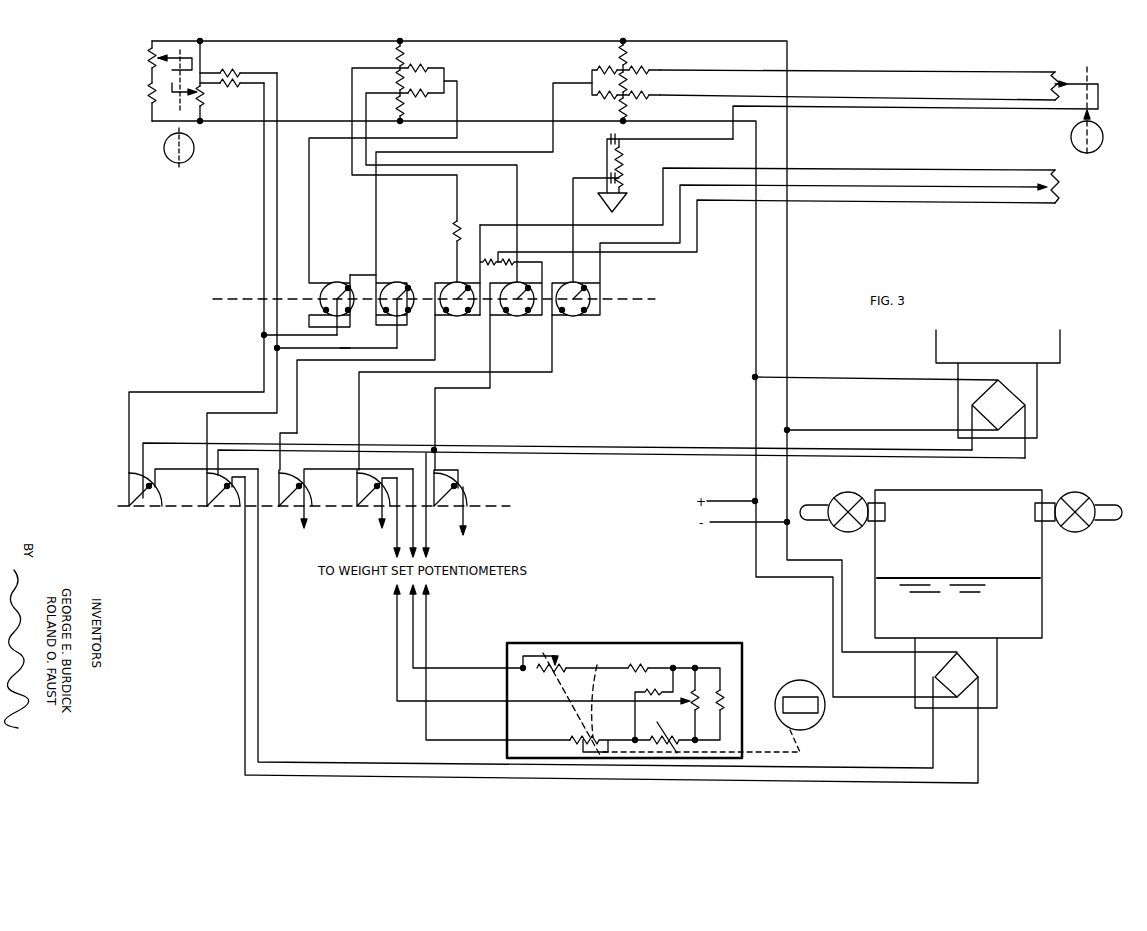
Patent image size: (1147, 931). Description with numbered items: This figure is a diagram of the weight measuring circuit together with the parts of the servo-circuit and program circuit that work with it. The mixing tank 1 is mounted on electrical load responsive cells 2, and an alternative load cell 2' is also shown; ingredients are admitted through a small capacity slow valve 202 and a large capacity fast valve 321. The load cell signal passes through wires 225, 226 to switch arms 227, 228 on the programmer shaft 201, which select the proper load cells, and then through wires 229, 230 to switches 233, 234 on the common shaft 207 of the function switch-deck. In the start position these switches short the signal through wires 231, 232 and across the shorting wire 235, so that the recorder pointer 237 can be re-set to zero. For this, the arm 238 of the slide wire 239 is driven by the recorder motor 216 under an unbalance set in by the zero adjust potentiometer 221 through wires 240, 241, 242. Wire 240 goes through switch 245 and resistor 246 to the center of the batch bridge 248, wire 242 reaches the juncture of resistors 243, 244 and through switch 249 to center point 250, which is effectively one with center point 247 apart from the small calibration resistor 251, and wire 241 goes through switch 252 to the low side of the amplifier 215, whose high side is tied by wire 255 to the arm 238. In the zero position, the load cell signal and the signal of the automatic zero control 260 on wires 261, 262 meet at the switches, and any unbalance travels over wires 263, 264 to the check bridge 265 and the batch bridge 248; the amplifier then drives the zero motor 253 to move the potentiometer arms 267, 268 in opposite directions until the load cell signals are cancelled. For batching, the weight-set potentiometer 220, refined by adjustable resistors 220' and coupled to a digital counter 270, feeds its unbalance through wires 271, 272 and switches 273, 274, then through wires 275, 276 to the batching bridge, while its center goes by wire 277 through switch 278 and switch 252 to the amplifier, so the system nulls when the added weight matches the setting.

The potentiometer arm 268 is at (156, 58).
The potentiometer arm 267 is at (190, 95).
The automatic zero control 260 is at (233, 54).
The zero motor 253 is at (195, 146).
The wire 262 is at (262, 215).
The wire 261 is at (278, 220).
The wire 230 is at (186, 392).
The wire 229 is at (218, 416).
The batch bridge 248 is at (438, 54).
The center point 247 is at (398, 66).
The calibration resistor 251 is at (404, 83).
The center point 250 is at (398, 92).
The wire 264 is at (309, 228).
The wire 263 is at (378, 230).
The check bridge 265 is at (668, 56).
The wire 255 is at (850, 109).
The slide wire 239 is at (1050, 84).
The arm 238 is at (1070, 80).
The recorder pointer 237 is at (1096, 114).
The recorder motor 216 is at (1072, 132).
The wire 240 is at (962, 170).
The wire 241 is at (842, 186).
The wire 242 is at (906, 203).
The zero adjust potentiometer 221 is at (1060, 186).
The amplifier 215 is at (616, 200).
The resistor 246 is at (453, 232).
The resistor 243 is at (486, 258).
The resistor 244 is at (510, 260).
The shaft 207 is at (232, 296).
The switch 234 is at (322, 296).
The shorting wire 235 is at (364, 274).
The switch 233 is at (392, 282).
The switch 245 is at (446, 316).
The switch 249 is at (503, 316).
The switch 252 is at (563, 316).
The wire 231 is at (300, 360).
The wire 232 is at (345, 350).
The wire 276 is at (298, 432).
The wire 275 is at (360, 410).
The programmer shaft 201 is at (120, 508).
The switch arm 228 is at (150, 498).
The switch arm 227 is at (225, 498).
The switch 274 is at (297, 498).
The switch 278 is at (375, 498).
The switch 273 is at (458, 500).
The wire 277 is at (394, 608).
The wire 271 is at (488, 666).
The wire 272 is at (484, 738).
The wire 225 is at (256, 678).
The wire 226 is at (243, 640).
The weight-set potentiometer 220 is at (640, 700).
The adjustable resistors 220' is at (567, 659).
The digital counter 270 is at (812, 722).
The load cell 2' is at (907, 394).
The mixing tank 1 is at (1044, 580).
The slow valve 202 is at (858, 530).
The fast valve 321 is at (1068, 530).
The load cells 2 is at (966, 673).